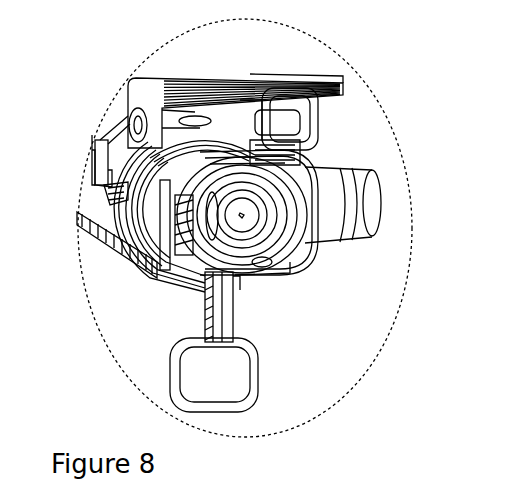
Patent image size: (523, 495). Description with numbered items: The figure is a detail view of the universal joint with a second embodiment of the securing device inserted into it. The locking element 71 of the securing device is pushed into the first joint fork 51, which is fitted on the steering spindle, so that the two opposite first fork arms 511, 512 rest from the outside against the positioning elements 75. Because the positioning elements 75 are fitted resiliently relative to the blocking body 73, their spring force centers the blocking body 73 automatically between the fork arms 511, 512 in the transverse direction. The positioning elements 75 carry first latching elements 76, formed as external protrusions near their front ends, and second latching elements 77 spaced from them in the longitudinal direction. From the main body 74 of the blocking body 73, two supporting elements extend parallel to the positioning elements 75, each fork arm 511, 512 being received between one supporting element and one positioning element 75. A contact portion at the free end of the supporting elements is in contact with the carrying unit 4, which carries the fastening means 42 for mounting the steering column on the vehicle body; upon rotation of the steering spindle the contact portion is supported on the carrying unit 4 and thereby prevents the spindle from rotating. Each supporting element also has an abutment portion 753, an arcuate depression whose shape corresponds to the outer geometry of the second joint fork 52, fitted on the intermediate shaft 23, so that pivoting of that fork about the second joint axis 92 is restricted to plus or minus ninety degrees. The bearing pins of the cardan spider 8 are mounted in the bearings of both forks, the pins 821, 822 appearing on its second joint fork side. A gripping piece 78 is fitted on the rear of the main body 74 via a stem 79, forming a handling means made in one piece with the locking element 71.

The fastening means 42 is at (165, 80).
The carrying unit 4 is at (100, 128).
The first latching elements 76 is at (92, 156).
The abutment portion 753 is at (108, 197).
The first joint fork 51 is at (78, 238).
The first fork arm 511 is at (163, 249).
The second latching elements 77 is at (175, 268).
The positioning elements 75 is at (190, 280).
The main body 74 is at (205, 291).
The blocking body 73 is at (300, 114).
The second joint axis 92 is at (290, 137).
The lower body element 821 is at (283, 160).
The second joint fork 52 is at (302, 190).
The intermediate shaft 23 is at (372, 210).
The first fork arm 512 is at (352, 222).
The cardan spider 8 is at (318, 232).
The lower element 822 is at (282, 262).
The locking element 71 is at (262, 273).
The stem 79 is at (222, 312).
The gripping piece 78 is at (240, 397).